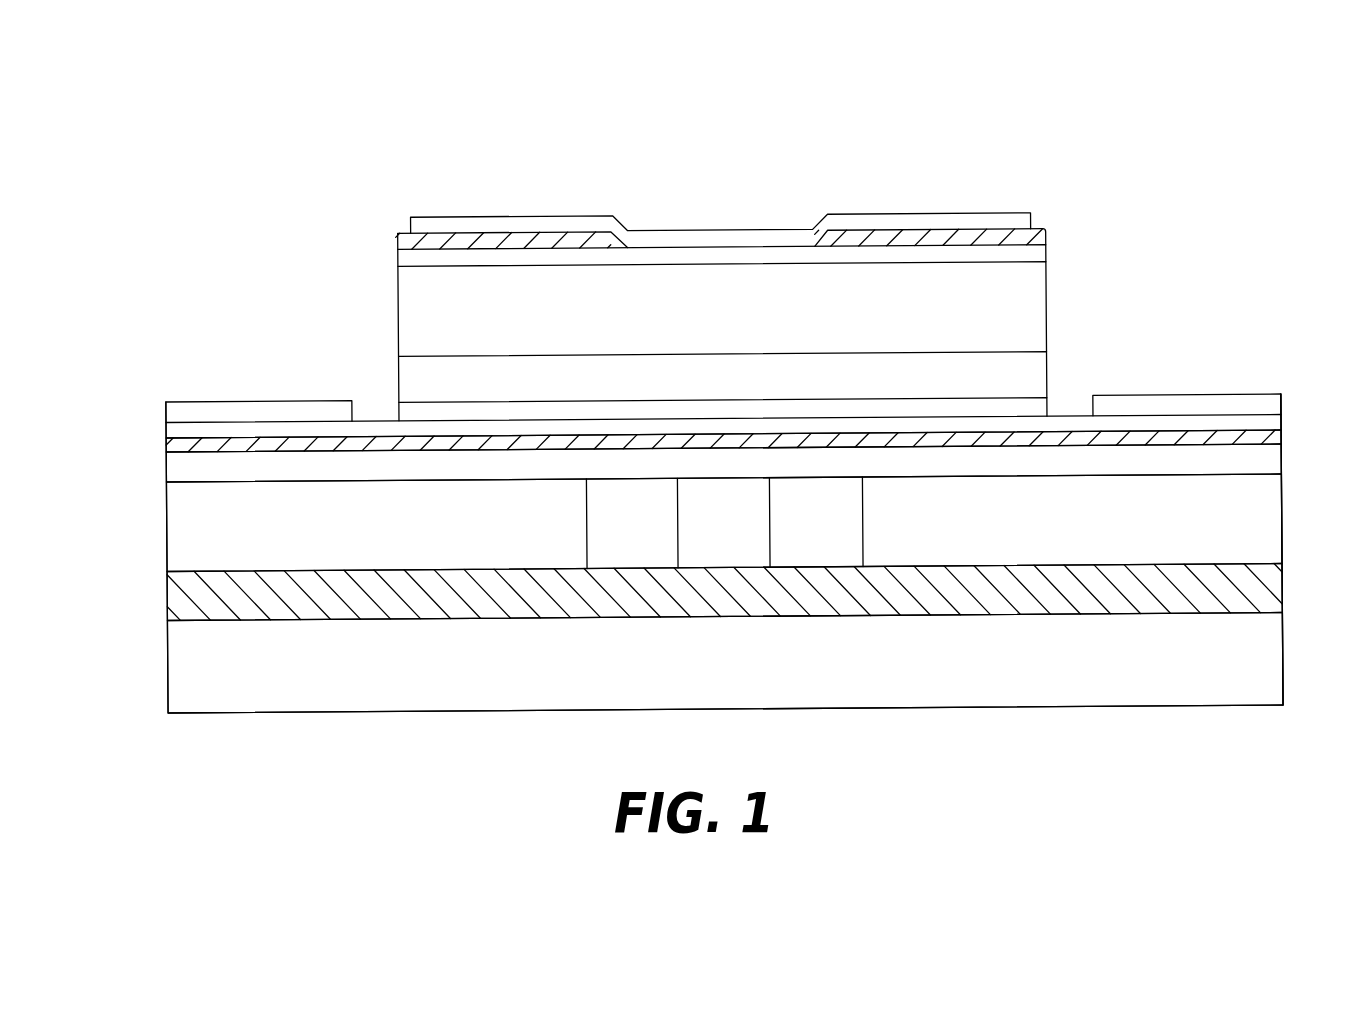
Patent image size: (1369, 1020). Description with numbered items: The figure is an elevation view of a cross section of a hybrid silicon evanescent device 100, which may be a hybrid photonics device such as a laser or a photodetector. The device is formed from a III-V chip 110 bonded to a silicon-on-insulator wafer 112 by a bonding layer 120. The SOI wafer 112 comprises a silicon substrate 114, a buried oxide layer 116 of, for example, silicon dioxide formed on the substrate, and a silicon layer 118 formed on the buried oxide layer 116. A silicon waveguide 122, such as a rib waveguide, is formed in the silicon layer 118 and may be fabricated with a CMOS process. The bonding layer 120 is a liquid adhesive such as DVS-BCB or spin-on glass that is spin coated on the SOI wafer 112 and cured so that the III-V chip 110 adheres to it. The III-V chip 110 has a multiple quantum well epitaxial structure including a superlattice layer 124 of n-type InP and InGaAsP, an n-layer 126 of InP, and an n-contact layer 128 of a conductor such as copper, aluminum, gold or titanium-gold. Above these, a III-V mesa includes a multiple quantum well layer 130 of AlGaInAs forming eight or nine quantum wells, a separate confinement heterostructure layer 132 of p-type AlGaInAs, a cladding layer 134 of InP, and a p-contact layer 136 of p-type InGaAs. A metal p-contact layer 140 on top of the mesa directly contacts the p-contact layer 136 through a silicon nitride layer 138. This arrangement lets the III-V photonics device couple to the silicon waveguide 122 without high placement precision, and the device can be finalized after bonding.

The hybrid silicon evanescent device 100 is at (1243, 123).
The III-V chip 110 is at (143, 222).
The silicon-on-insulator (SOI) wafer 112 is at (146, 483).
The silicon substrate 114 is at (1283, 662).
The buried oxide layer 116 is at (1283, 588).
The silicon layer 118 is at (1283, 517).
The bonding layer 120 is at (1283, 459).
The silicon waveguide 122 is at (884, 521).
The superlattice layer 124 is at (1283, 425).
The n-layer 126 is at (1283, 403).
The n-contact layer 128 is at (1187, 396).
The multiple quantum well (MQW) layer 130 is at (1050, 408).
The separate confinement heterostructure (SCH) layer 132 is at (1050, 375).
The cladding layer 134 is at (1049, 293).
The p-contact layer 136 is at (1049, 250).
The silicon nitride layer 138 is at (1050, 238).
The p-contact layer 140 is at (932, 213).